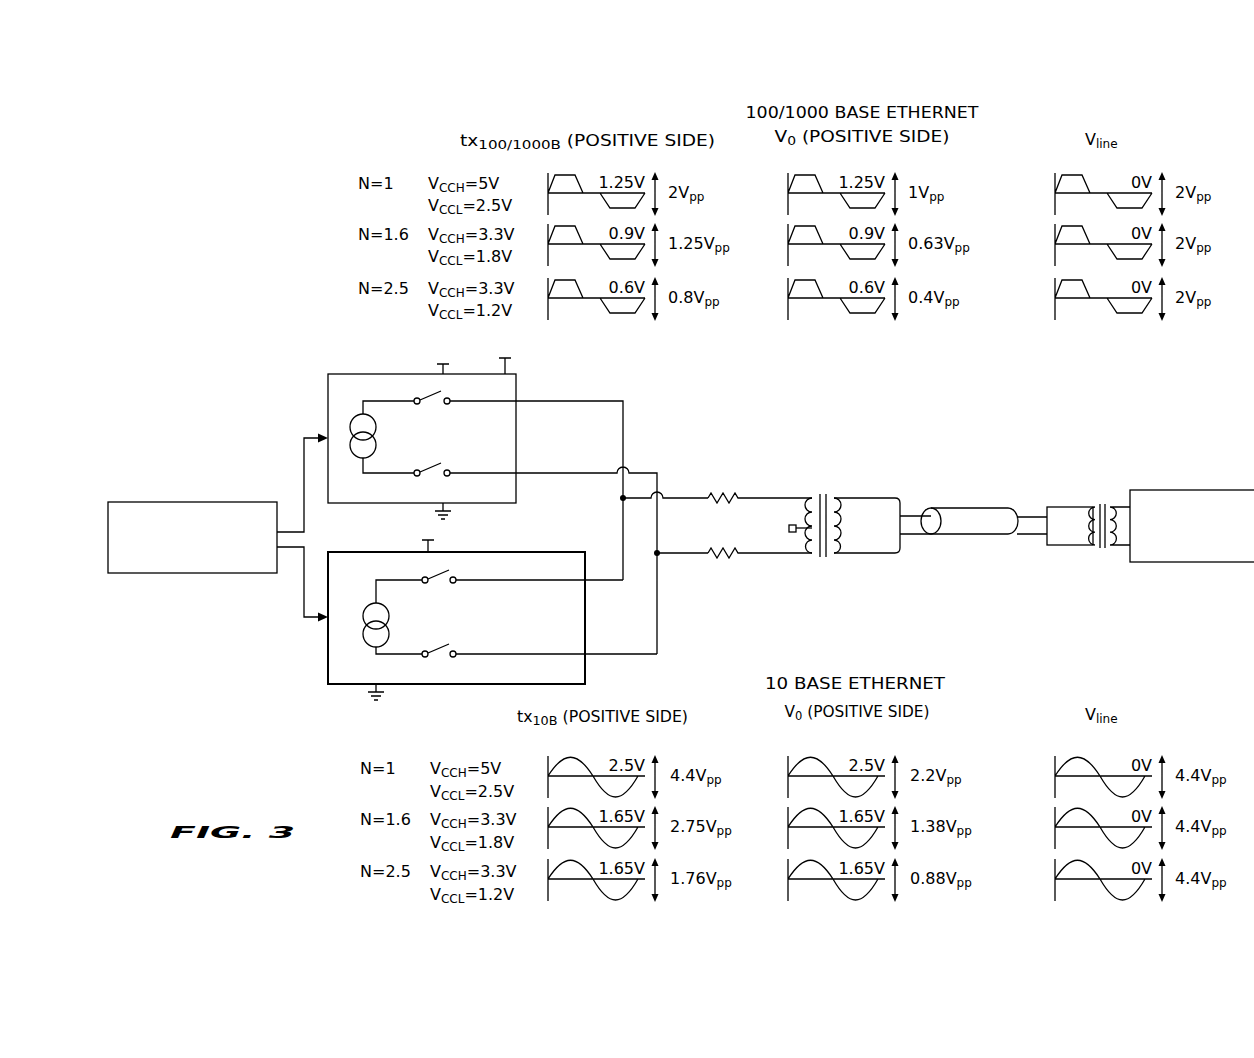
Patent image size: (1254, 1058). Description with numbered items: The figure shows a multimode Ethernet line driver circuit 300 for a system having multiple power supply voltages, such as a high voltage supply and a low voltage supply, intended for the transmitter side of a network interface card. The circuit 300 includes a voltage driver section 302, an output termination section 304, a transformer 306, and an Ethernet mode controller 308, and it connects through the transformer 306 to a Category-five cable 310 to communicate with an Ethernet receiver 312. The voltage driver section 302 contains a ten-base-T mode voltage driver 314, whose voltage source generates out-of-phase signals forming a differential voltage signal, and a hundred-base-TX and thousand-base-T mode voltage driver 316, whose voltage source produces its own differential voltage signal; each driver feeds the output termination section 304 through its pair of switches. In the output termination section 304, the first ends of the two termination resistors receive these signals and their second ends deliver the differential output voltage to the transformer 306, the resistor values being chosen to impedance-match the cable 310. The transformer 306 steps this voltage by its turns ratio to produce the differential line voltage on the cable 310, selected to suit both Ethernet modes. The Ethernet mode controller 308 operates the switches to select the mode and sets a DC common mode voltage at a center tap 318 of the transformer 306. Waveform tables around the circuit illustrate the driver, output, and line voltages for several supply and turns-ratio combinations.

The multimode Ethernet line driver circuit 300 is at (791, 425).
The voltage driver section 302 is at (628, 378).
The output termination section 304 is at (733, 474).
The transformer 306 is at (840, 497).
The Ethernet mode controller 308 is at (138, 501).
The cable 310 is at (985, 566).
The Ethernet receiver 312 is at (1181, 443).
The 10BASE-T mode voltage driver 314 is at (328, 658).
The 100BASE-TX/1000BASE-T mode voltage driver 316 is at (372, 375).
The center tap 318 is at (792, 534).